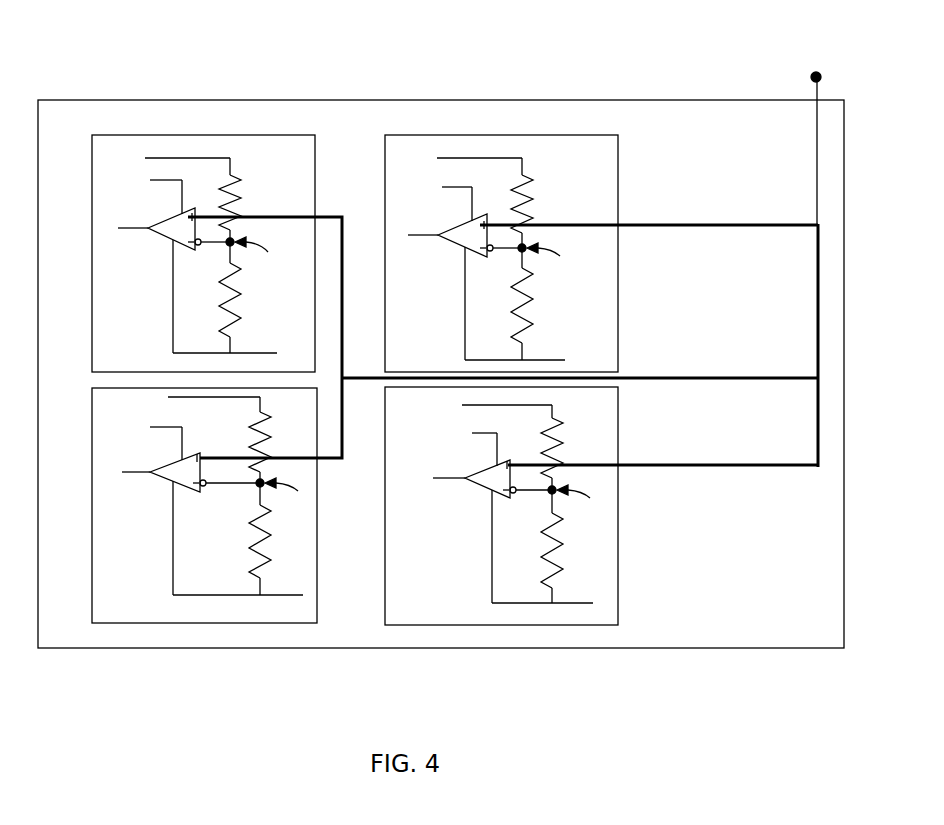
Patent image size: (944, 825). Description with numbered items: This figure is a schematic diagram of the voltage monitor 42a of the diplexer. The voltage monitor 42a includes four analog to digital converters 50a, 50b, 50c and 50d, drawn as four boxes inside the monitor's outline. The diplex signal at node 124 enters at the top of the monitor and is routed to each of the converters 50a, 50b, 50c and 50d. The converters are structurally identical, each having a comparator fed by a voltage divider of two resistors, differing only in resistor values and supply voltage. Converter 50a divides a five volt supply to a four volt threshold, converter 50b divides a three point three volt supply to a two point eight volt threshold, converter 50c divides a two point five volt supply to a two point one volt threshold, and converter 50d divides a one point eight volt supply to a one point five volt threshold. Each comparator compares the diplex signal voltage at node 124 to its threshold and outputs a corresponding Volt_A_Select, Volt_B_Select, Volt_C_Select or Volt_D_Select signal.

The node 124 is at (835, 146).
The voltage monitor 42a is at (816, 626).
The analog to digital converter 50a is at (137, 361).
The analog to digital converter 50b is at (426, 361).
The analog to digital converter 50c is at (132, 615).
The analog to digital converter 50d is at (434, 616).